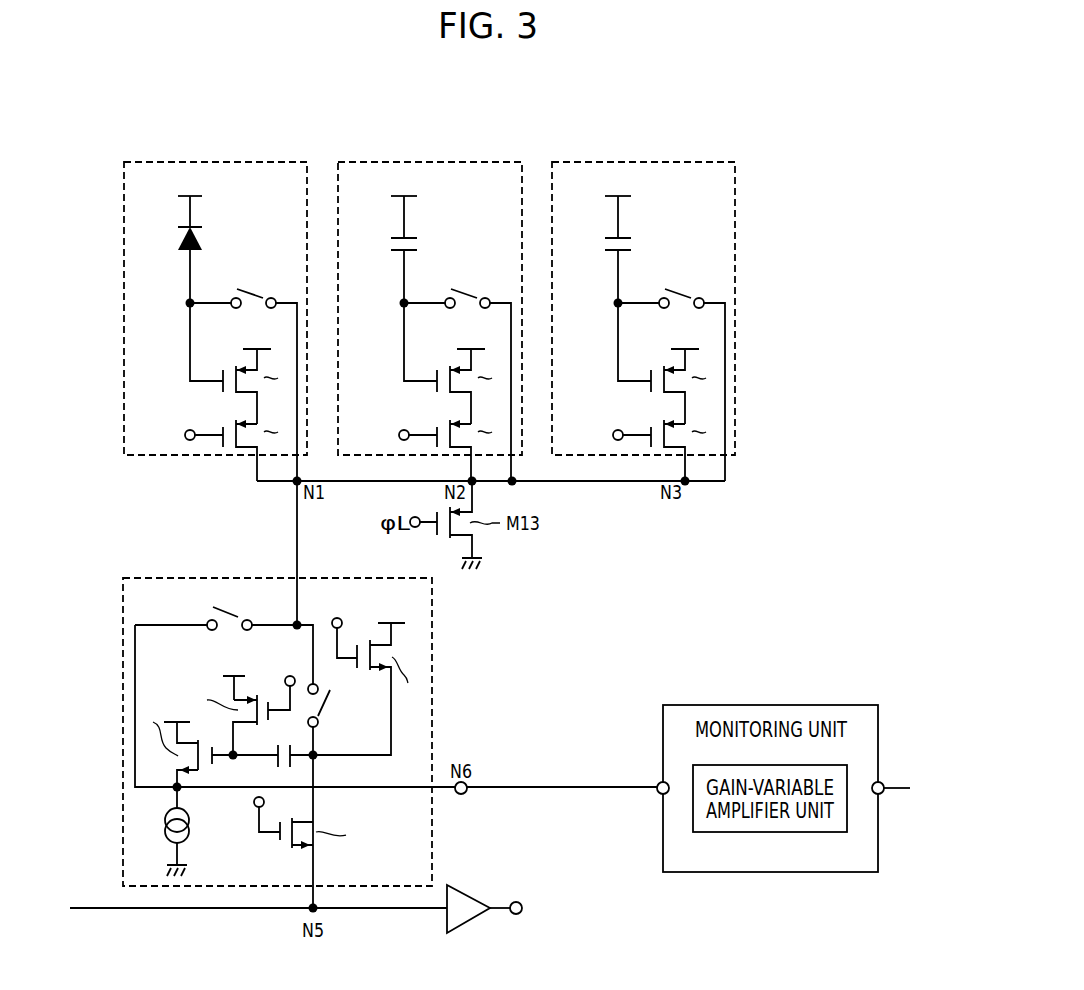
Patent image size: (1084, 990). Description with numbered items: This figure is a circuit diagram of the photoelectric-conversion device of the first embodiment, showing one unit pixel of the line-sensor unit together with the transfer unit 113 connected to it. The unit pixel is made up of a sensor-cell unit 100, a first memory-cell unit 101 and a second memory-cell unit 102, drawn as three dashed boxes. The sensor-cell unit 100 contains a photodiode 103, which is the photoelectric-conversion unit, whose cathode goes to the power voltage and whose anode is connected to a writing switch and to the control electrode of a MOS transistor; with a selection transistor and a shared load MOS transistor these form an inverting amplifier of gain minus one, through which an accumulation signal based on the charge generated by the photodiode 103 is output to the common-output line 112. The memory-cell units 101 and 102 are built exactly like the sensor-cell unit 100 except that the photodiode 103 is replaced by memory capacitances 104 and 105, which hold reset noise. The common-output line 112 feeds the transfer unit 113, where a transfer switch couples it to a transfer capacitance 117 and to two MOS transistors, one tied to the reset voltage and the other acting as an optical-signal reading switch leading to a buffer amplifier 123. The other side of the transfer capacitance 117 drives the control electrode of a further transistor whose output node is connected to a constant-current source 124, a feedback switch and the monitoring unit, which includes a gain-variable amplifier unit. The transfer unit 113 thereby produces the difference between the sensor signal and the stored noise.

The sensor-cell unit 100 is at (218, 300).
The first memory-cell unit 101 is at (432, 300).
The second memory-cell unit 102 is at (646, 300).
The photodiode 103 is at (177, 238).
The memory capacitance 104 is at (391, 243).
The memory capacitance 105 is at (605, 243).
The common-output line 112 is at (297, 534).
The transfer unit 113 is at (146, 578).
The transfer capacitance 117 is at (288, 770).
The buffer amplifier 123 is at (470, 895).
The constant-current source 124 is at (189, 836).